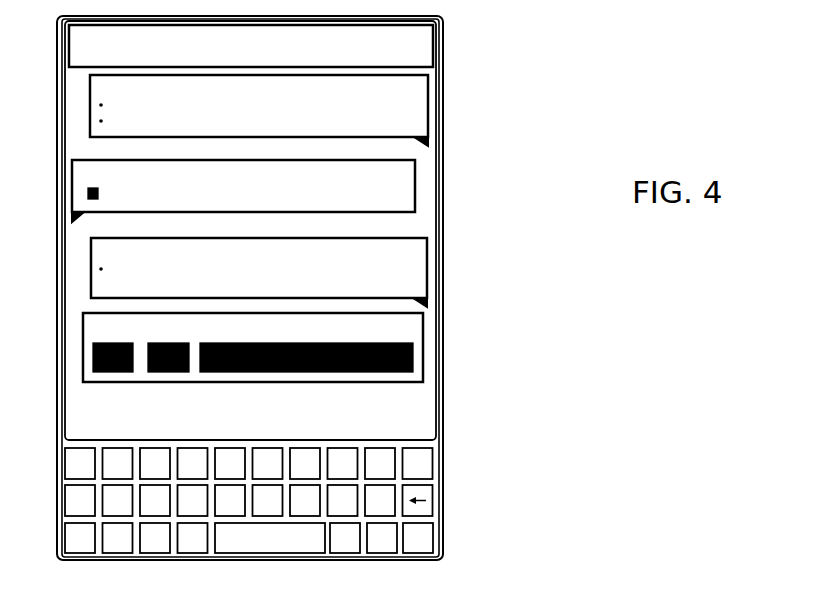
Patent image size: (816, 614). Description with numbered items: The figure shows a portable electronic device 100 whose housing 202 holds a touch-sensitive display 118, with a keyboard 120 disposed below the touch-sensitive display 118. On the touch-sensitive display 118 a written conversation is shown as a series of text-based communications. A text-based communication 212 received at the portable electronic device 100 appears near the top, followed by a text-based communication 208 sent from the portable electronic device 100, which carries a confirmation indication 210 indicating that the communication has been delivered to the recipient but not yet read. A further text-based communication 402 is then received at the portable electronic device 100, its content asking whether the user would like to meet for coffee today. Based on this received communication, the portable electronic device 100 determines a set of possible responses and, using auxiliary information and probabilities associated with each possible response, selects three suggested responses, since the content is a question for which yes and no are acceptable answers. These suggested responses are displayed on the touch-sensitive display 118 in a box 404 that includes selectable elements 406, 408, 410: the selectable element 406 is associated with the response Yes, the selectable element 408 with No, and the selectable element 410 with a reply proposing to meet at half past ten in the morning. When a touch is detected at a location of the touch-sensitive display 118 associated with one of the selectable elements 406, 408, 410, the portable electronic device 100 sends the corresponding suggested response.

The portable electronic device 100 is at (485, 585).
The touch-sensitive display 118 is at (432, 80).
The keyboard 120 is at (433, 463).
The housing 202 is at (439, 127).
The text-based communication 208 is at (76, 172).
The confirmation indication 210 is at (89, 197).
The text-based communication 212 is at (87, 90).
The text-based communication 402 is at (426, 250).
The box 404 is at (282, 351).
The selectable element 406 is at (113, 373).
The selectable element 408 is at (178, 373).
The selectable element 410 is at (278, 366).